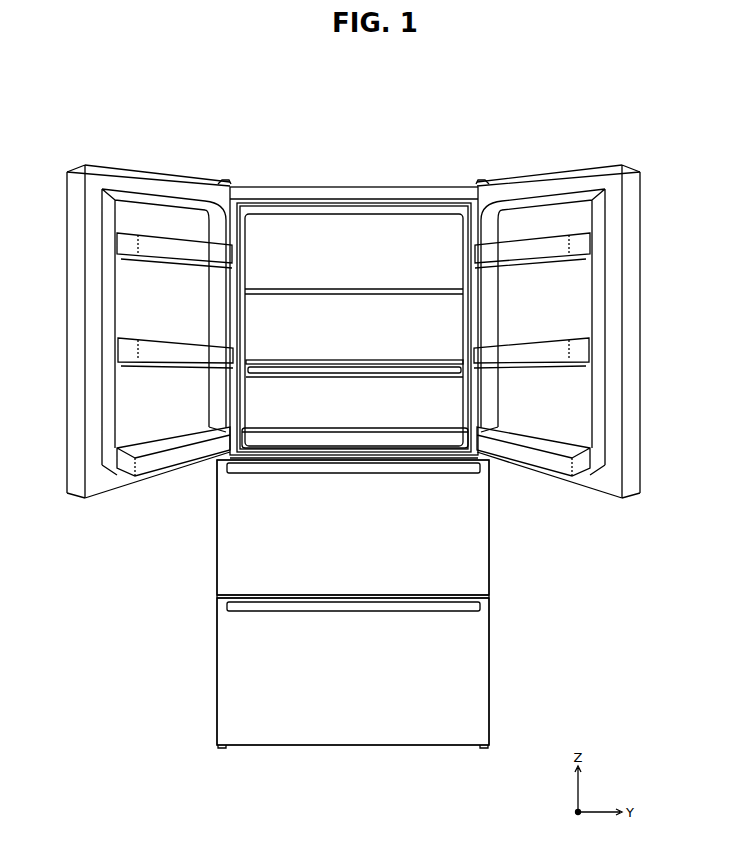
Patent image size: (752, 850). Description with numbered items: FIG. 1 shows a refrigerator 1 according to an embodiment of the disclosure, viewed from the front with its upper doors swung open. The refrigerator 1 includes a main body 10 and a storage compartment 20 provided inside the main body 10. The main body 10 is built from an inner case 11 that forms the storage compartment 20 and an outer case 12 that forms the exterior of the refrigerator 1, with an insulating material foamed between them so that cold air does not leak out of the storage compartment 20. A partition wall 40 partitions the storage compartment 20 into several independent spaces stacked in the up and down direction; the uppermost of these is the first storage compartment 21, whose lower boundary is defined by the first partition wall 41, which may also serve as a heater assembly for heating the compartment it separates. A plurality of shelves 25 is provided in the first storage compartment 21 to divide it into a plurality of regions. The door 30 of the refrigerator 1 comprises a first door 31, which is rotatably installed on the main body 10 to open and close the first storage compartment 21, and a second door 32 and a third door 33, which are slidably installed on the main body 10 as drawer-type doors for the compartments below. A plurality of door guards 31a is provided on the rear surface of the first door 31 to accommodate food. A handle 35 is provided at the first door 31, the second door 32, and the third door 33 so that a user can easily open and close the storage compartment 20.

The refrigerator 1 is at (353, 425).
The main body 10 is at (379, 143).
The inner case 11 is at (422, 214).
The outer case 12 is at (374, 187).
The storage compartment 20 is at (354, 228).
The first storage compartment 21 is at (307, 243).
The shelves 25 is at (345, 367).
The door 30 is at (373, 439).
The first door 31 is at (153, 183).
The door guards 31a is at (560, 250).
The second door 32 is at (458, 533).
The third door 33 is at (458, 686).
The handle 35 is at (457, 471).
The partition wall 40 is at (355, 463).
The first partition wall 41 is at (403, 452).